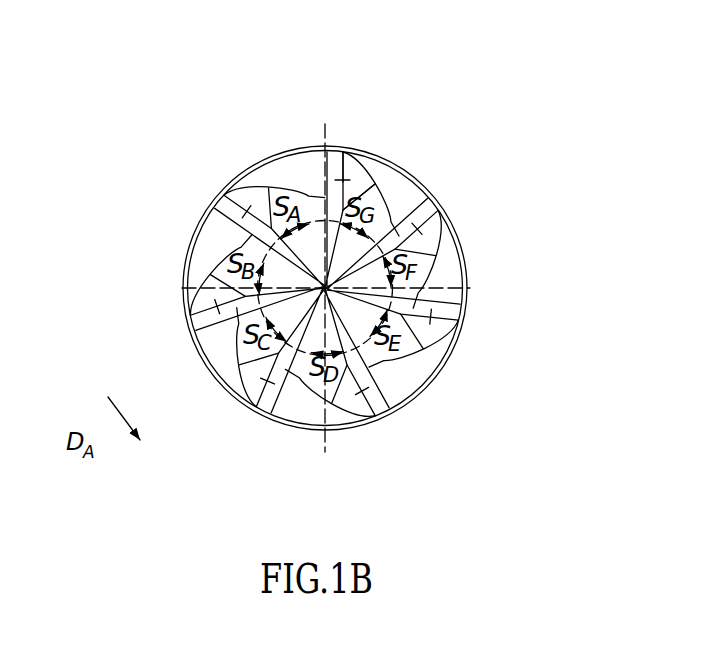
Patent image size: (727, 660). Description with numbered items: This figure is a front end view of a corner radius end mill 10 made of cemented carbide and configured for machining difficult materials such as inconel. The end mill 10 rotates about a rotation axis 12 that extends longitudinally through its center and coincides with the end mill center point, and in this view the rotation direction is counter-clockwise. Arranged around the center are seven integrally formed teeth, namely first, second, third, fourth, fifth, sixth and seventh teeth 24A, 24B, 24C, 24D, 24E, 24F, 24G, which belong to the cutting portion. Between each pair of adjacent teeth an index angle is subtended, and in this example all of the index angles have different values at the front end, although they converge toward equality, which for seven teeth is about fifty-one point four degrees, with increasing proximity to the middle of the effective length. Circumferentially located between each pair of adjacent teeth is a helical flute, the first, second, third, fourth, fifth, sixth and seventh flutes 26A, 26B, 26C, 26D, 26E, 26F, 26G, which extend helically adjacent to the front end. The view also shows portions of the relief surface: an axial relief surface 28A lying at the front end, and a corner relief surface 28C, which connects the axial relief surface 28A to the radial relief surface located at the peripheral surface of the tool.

The corner radius end mill 10 is at (338, 253).
The rotation axis 12 is at (282, 288).
The first tooth 24A is at (340, 145).
The second tooth 24B is at (211, 192).
The third tooth 24C is at (177, 321).
The fourth tooth 24D is at (247, 417).
The fifth tooth 24E is at (379, 432).
The sixth tooth 24F is at (471, 317).
The seventh tooth 24G is at (453, 205).
The first flute 26A is at (290, 168).
The second flute 26B is at (207, 240).
The third flute 26C is at (217, 357).
The fourth flute 26D is at (288, 415).
The fifth flute 26E is at (412, 386).
The sixth flute 26F is at (449, 272).
The seventh flute 26G is at (403, 187).
The axial relief surface 28A is at (376, 164).
The corner relief surface 28C is at (340, 150).